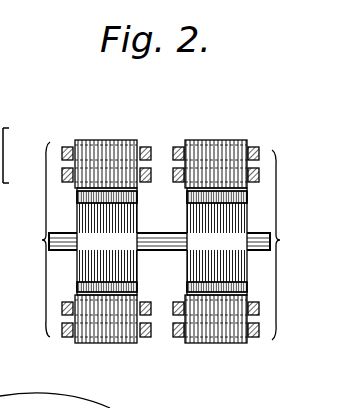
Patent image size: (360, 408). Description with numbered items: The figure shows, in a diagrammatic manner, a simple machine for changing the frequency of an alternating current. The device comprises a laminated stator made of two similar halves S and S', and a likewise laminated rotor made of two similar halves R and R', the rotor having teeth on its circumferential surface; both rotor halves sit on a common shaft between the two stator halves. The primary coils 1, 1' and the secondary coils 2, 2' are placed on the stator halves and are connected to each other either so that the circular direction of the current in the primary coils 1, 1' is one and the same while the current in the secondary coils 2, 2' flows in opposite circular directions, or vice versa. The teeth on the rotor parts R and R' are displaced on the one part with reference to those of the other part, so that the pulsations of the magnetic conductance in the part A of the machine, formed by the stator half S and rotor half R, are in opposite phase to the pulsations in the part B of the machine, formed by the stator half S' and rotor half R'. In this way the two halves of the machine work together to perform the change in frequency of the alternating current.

The stator half S is at (106, 217).
The stator half S' is at (220, 216).
The rotor half R is at (92, 241).
The rotor half R' is at (228, 241).
The primary coil 1 is at (113, 243).
The primary coil 1' is at (208, 243).
The secondary coil 2 is at (106, 242).
The secondary coil 2' is at (216, 242).
The part of the machine A is at (29, 239).
The part of the machine B is at (286, 245).